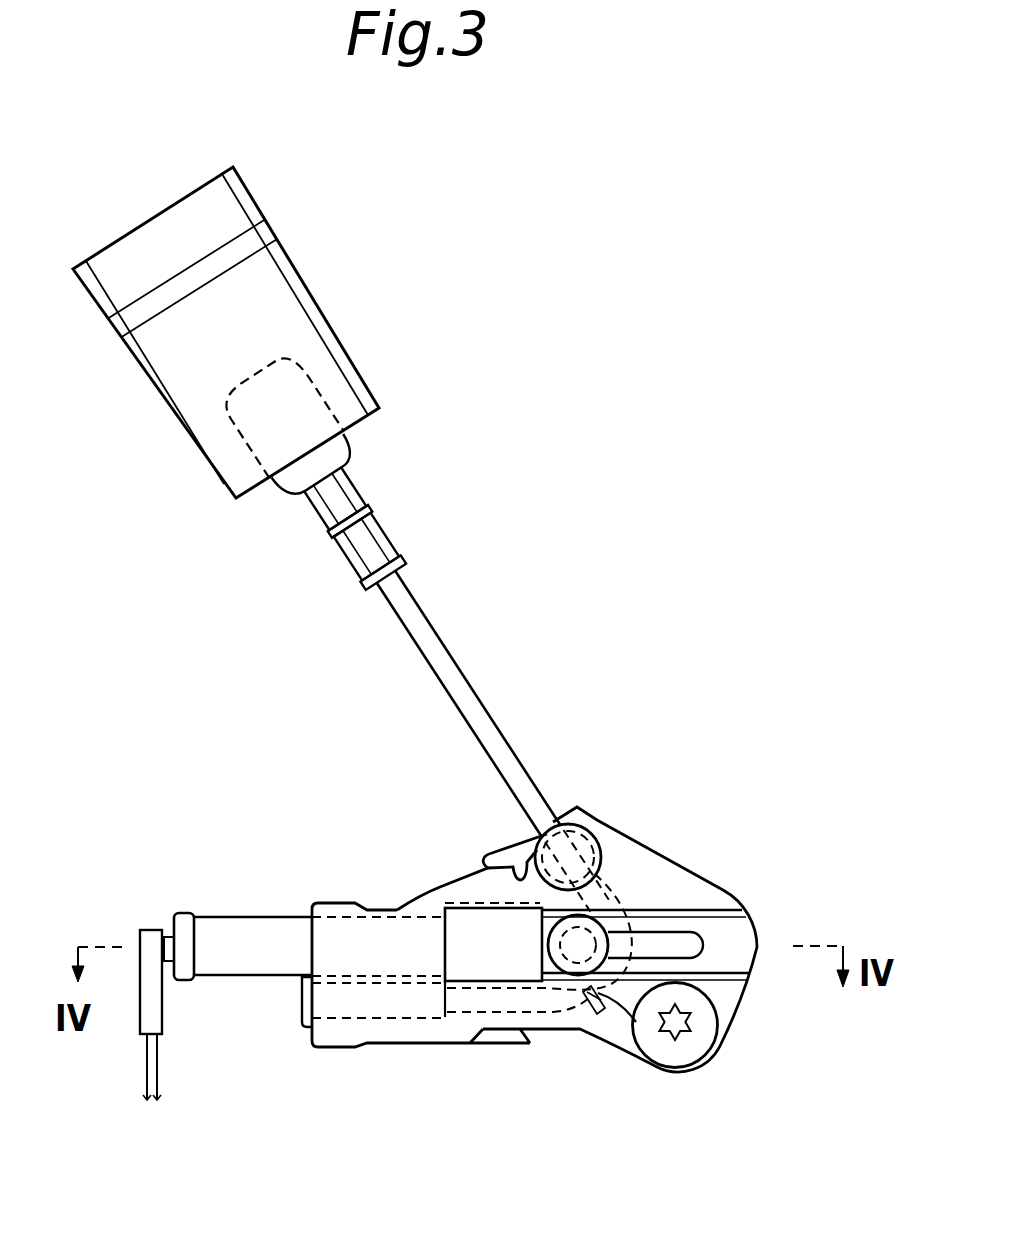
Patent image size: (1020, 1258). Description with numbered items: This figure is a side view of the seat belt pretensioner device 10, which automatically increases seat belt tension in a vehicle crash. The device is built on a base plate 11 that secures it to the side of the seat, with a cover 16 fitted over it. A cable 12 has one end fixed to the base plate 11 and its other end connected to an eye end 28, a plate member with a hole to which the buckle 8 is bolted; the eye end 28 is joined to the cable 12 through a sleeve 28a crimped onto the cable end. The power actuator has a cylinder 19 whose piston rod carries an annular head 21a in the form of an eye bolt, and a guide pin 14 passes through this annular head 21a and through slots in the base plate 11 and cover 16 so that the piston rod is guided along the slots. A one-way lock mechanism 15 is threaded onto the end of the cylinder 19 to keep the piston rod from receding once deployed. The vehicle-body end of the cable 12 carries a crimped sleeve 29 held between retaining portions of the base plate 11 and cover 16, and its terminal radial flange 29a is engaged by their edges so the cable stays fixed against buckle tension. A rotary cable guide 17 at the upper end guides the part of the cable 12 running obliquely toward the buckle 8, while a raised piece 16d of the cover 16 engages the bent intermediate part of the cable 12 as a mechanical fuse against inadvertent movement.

The buckle 8 is at (293, 290).
The eye end 28 is at (323, 393).
The sleeve 28a is at (382, 528).
The cable 12 is at (463, 685).
The rotary cable guide 17 is at (598, 822).
The pretensioner device 10 is at (708, 840).
The cylinder 19 is at (230, 917).
The external radial flange 29a is at (305, 1027).
The sleeve 29 is at (389, 1019).
The one-way lock mechanism 15 is at (487, 975).
The guide pin 14 is at (578, 955).
The annular head 21a is at (612, 1022).
The cover 16 is at (727, 1000).
The base plate 11 is at (650, 939).
The raised piece 16d is at (638, 1015).